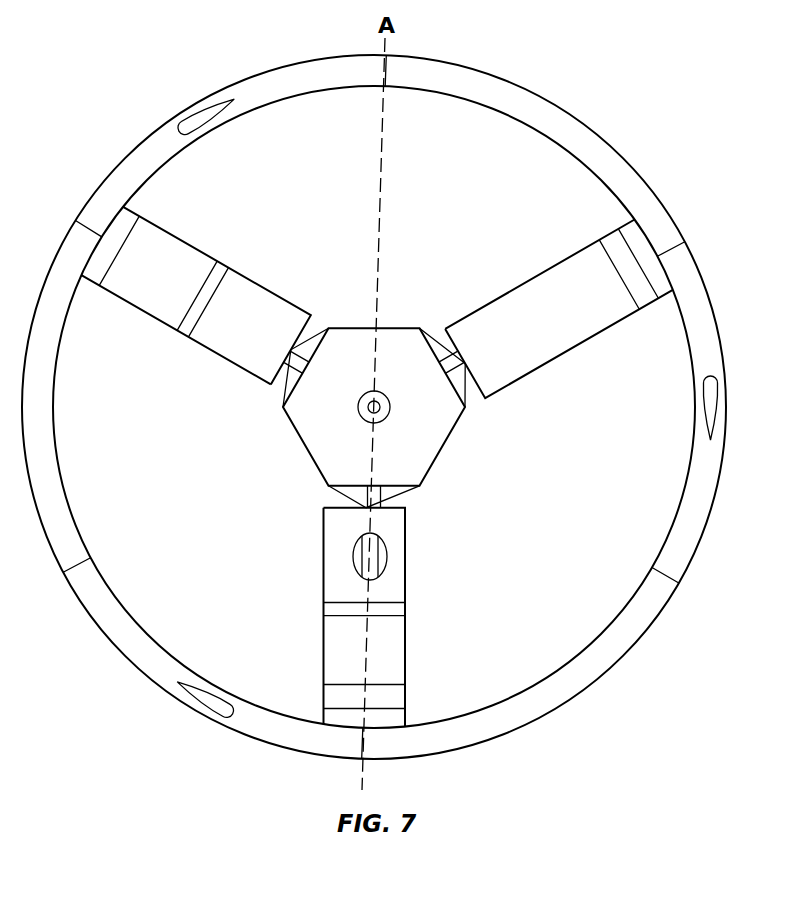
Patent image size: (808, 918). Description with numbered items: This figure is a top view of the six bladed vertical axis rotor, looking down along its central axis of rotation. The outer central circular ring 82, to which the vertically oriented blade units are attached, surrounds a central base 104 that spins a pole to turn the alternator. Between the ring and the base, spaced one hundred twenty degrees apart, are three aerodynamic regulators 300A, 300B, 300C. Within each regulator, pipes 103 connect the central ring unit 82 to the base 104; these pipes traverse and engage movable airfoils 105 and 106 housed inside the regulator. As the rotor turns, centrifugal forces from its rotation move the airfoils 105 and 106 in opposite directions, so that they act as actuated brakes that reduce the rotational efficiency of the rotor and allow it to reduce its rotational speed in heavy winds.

The central circular ring 82 is at (658, 220).
The base 104 is at (435, 422).
The pipes 103 is at (388, 553).
The movable airfoil 105 is at (397, 592).
The movable airfoil 106 is at (397, 653).
The aerodynamic regulator 300A is at (340, 617).
The aerodynamic regulator 300B is at (218, 372).
The aerodynamic regulator 300C is at (484, 296).